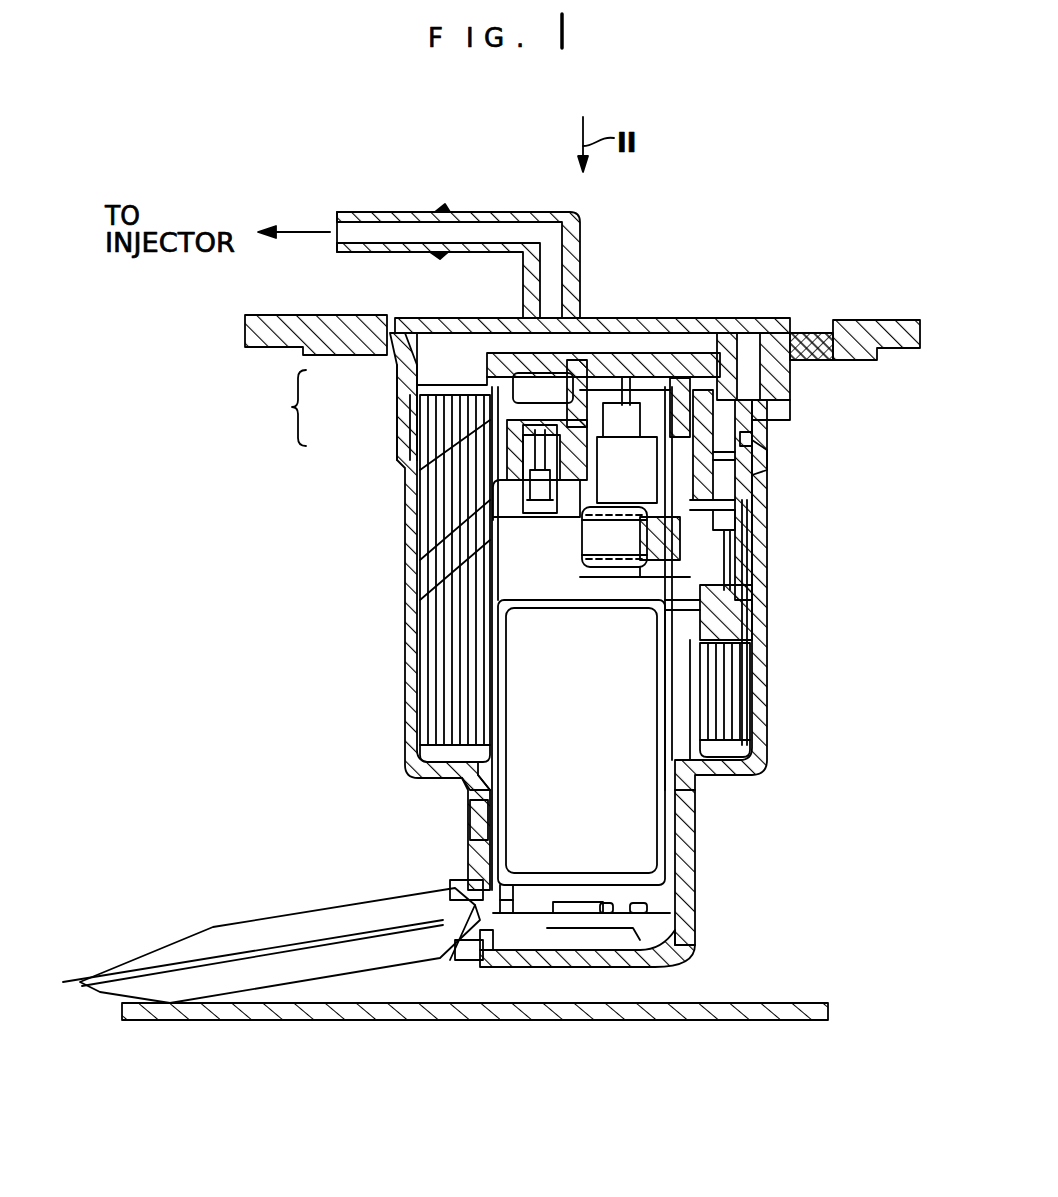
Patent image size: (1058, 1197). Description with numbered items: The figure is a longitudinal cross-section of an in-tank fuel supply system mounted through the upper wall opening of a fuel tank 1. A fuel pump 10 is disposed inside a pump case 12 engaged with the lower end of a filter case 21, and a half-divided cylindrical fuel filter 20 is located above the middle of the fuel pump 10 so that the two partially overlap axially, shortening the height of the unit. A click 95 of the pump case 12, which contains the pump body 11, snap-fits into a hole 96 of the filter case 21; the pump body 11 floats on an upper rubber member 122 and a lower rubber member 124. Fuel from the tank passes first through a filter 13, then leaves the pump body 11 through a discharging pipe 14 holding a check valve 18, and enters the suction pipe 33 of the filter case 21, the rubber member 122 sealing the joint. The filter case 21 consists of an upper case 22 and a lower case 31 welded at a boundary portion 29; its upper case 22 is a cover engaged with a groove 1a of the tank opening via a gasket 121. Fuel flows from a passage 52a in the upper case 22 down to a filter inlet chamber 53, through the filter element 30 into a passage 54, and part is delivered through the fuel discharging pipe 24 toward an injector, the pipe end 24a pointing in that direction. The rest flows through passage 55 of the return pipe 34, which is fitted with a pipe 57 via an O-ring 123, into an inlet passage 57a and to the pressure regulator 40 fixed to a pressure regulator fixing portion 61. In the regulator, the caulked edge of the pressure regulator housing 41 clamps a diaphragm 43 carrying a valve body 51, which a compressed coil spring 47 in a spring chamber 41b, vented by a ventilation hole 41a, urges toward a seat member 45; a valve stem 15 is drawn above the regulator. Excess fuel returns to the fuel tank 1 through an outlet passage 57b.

The fuel tank 1 is at (857, 325).
The groove 1a is at (820, 330).
The fuel pump 10 is at (645, 733).
The pump body 11 is at (695, 823).
The pump case 12 is at (690, 880).
The filter 13 is at (240, 935).
The discharging pipe 14 is at (545, 513).
The valve stem 15 is at (630, 413).
The check valve 18 is at (540, 530).
The fuel filter 20 is at (405, 478).
The filter case 21 is at (322, 412).
The upper case 22 is at (405, 376).
The fuel discharging pipe 24 is at (421, 211).
The pipe end 24a is at (345, 228).
The boundary portion 29 is at (742, 408).
The filter element 30 is at (440, 683).
The lower case 31 is at (407, 420).
The suction pipe 33 is at (507, 455).
The return pipe 34 is at (743, 450).
The pressure regulator 40 is at (633, 592).
The pressure regulator housing 41 is at (612, 578).
The ventilation hole 41a is at (620, 590).
The spring chamber 41b is at (700, 598).
The diaphragm 43 is at (658, 590).
The seat member 45 is at (723, 622).
The compressed coil spring 47 is at (612, 550).
The valve body 51 is at (720, 520).
The passage 52a is at (512, 362).
The filter inlet chamber 53 is at (435, 748).
The passage 54 is at (438, 345).
The passage 55 is at (727, 410).
The pipe 57 is at (735, 553).
The inlet passage 57a is at (727, 503).
The outlet passage 57b is at (730, 632).
The pressure regulator fixing portion 61 is at (660, 465).
The click 95 is at (478, 818).
The hole 96 is at (478, 797).
The gasket 121 is at (790, 330).
The upper rubber member 122 is at (520, 497).
The O-ring 123 is at (757, 438).
The lower rubber member 124 is at (680, 915).